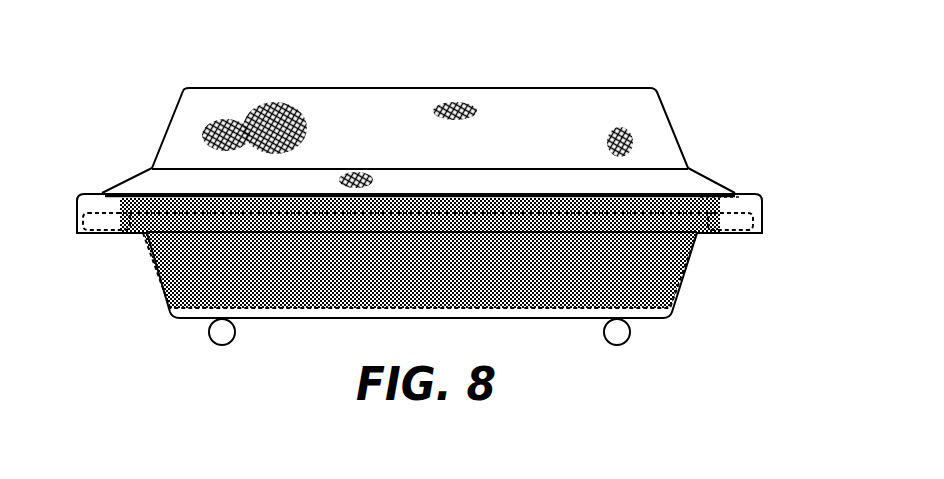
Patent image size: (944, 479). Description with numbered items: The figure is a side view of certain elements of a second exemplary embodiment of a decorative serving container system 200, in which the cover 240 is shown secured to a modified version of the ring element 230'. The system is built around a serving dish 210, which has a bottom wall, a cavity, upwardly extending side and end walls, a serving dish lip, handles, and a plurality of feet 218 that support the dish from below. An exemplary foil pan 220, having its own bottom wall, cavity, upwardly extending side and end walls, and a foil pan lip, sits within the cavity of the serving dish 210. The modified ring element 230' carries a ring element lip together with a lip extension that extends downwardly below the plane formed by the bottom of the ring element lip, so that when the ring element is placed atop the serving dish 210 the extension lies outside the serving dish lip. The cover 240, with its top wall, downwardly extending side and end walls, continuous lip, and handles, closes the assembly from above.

The decorative serving container system 200 is at (452, 207).
The cover 240 is at (281, 80).
The modified ring element 230' is at (780, 175).
The foil pan 220 is at (677, 282).
The serving dish 210 is at (412, 285).
The feet 218 is at (233, 338).